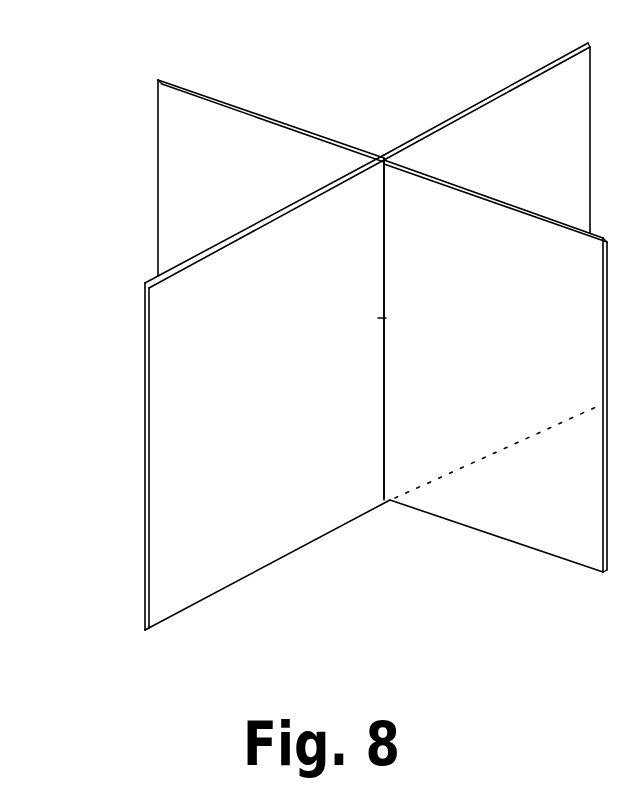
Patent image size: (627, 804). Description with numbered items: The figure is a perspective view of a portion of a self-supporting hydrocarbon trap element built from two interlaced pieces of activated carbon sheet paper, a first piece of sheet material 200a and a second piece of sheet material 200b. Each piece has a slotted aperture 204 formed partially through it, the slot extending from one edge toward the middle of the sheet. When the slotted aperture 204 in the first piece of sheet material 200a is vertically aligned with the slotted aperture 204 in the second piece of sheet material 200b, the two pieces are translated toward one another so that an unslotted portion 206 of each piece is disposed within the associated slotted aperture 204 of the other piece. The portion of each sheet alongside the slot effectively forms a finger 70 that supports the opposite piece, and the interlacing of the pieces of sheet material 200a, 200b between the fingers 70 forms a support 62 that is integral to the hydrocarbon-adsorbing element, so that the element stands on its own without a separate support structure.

The first piece of sheet material 200a is at (568, 108).
The second piece of sheet material 200b is at (568, 293).
The slotted aperture 204 is at (372, 157).
The unslotted portion 206 is at (388, 157).
The support 62 is at (362, 336).
The finger 70 is at (315, 155).